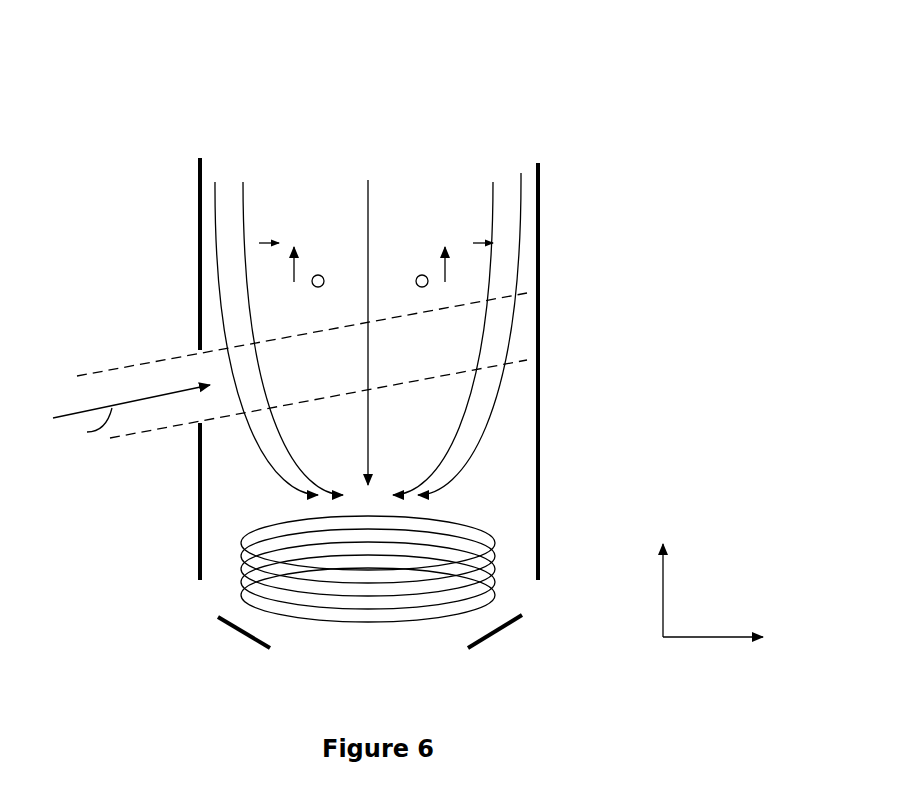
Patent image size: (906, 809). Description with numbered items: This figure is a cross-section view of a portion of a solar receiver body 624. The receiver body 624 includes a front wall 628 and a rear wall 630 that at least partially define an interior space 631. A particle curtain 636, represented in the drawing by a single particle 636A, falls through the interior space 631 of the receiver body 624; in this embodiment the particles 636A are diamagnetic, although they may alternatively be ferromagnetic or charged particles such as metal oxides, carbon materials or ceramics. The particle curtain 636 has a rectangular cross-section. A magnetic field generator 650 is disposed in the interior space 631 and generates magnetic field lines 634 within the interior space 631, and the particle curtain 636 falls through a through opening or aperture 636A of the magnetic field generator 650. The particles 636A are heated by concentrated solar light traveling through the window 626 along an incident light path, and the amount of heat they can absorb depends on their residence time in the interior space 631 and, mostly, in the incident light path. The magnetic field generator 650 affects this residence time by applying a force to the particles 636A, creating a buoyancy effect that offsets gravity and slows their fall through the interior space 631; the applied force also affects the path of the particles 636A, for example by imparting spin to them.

The receiver body 624 is at (156, 93).
The window 626 is at (200, 375).
The front wall 628 is at (200, 350).
The rear wall 630 is at (540, 313).
The interior space 631 is at (200, 490).
The magnetic field lines 634 is at (490, 208).
The particle curtain 636 is at (340, 173).
The particle 636A is at (318, 274).
The magnetic field generator 650 is at (233, 582).